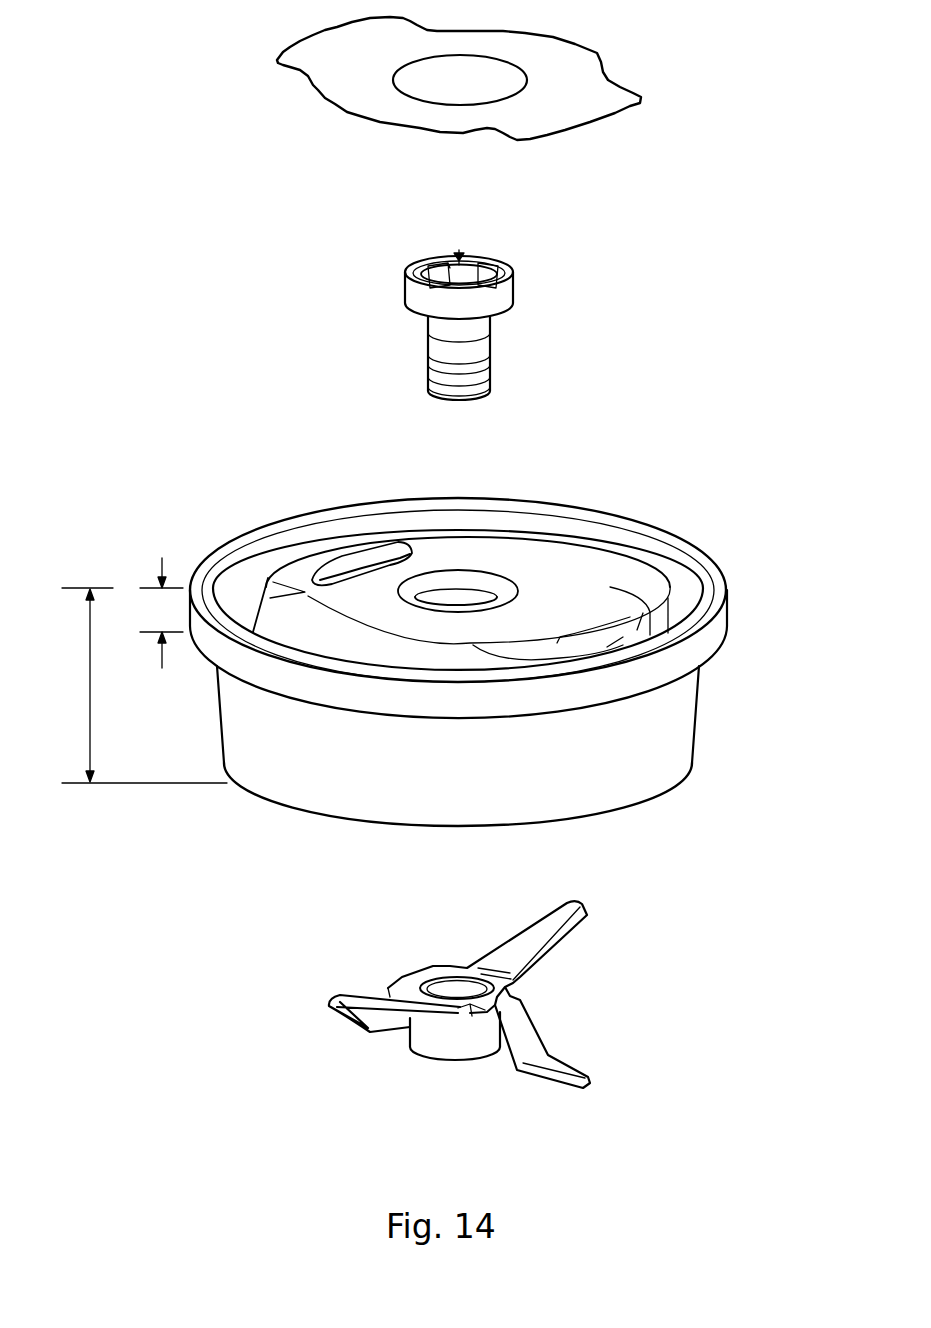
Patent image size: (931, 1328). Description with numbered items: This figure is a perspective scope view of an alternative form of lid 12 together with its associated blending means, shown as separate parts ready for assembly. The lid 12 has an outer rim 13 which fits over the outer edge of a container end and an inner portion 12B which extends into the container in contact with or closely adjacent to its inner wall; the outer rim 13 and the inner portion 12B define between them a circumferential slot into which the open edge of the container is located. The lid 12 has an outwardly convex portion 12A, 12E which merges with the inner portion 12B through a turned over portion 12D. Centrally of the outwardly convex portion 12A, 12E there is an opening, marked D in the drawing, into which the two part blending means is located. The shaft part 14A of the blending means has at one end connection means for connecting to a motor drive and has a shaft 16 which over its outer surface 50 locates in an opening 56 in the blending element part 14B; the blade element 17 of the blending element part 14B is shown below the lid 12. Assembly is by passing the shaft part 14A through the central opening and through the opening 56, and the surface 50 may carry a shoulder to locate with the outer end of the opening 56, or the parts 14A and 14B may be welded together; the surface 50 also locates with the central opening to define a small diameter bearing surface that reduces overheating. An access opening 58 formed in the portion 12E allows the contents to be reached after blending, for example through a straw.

The lid 12 is at (443, 664).
The outwardly convex portion 12A is at (326, 641).
The inner portion 12B is at (687, 737).
The turned over portion 12D is at (632, 812).
The outwardly convex portion 12E is at (580, 599).
The outer rim 13 is at (713, 640).
The shaft part 14A is at (458, 250).
The blending element part 14B is at (470, 1072).
The shaft 16 is at (460, 291).
The blade assembly 17 is at (477, 1032).
The outer surface 50 is at (427, 368).
The opening 56 is at (453, 982).
The opening 58 is at (565, 120).
The central opening D is at (435, 570).